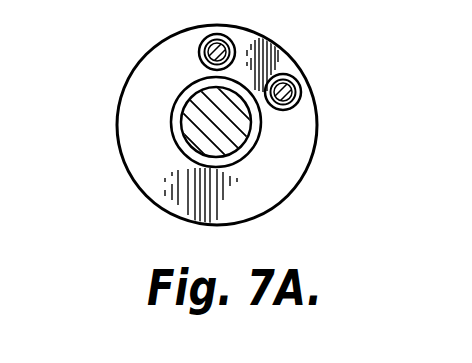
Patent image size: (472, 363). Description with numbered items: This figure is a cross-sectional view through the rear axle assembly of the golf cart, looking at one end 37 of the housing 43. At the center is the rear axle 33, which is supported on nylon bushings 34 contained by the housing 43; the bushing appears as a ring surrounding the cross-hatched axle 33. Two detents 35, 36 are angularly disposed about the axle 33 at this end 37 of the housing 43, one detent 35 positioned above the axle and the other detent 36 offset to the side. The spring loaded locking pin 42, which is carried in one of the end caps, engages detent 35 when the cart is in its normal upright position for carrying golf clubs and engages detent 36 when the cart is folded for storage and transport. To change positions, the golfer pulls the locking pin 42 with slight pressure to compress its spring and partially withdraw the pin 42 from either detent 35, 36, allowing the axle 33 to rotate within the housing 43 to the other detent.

The rear axle 33 is at (203, 115).
The nylon bushings 34 is at (250, 132).
The detent 35 is at (200, 48).
The detent 36 is at (301, 95).
The end of housing 37 is at (128, 170).
The spring loaded locking pin 42 is at (240, 47).
The housing 43 is at (300, 183).